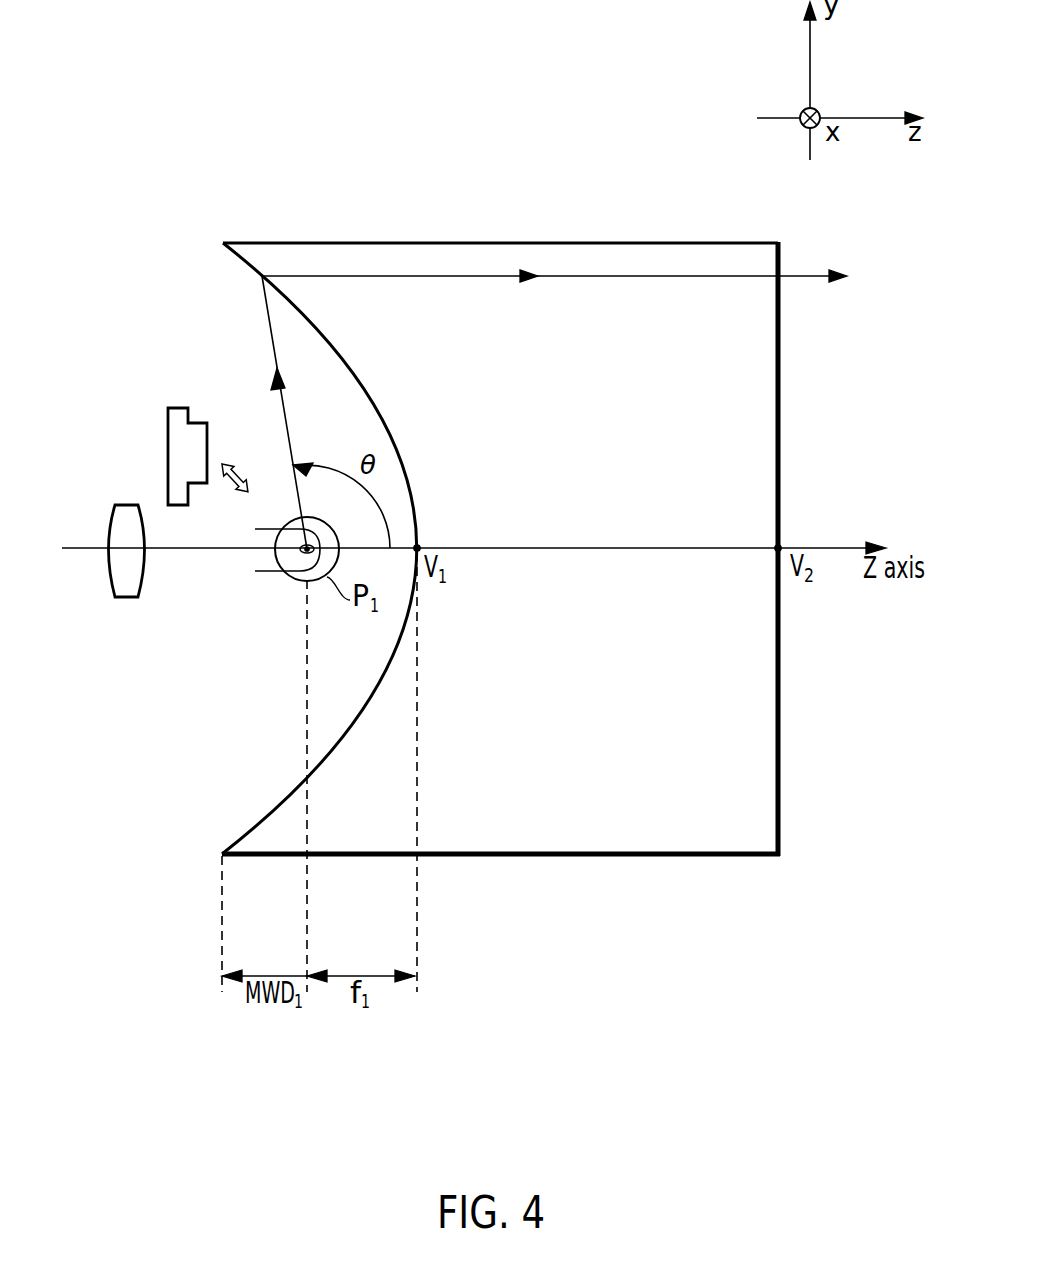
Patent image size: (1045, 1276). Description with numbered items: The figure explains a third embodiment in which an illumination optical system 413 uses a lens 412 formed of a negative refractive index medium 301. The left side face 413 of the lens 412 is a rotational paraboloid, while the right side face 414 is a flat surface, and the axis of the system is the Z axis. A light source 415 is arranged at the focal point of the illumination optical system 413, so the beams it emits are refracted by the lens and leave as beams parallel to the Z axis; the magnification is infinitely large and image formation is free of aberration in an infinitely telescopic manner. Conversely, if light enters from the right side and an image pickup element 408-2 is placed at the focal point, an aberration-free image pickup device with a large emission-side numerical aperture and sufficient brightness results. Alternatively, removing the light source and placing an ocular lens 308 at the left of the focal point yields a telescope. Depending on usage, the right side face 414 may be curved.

The lens 412 is at (642, 243).
The right side face 414 is at (780, 800).
The negative refractive index medium 301 is at (341, 838).
The illumination optical system 413 is at (808, 1100).
The ocular lens 308 is at (143, 578).
The image pickup element 408-2 is at (168, 440).
The light source 415 is at (296, 579).